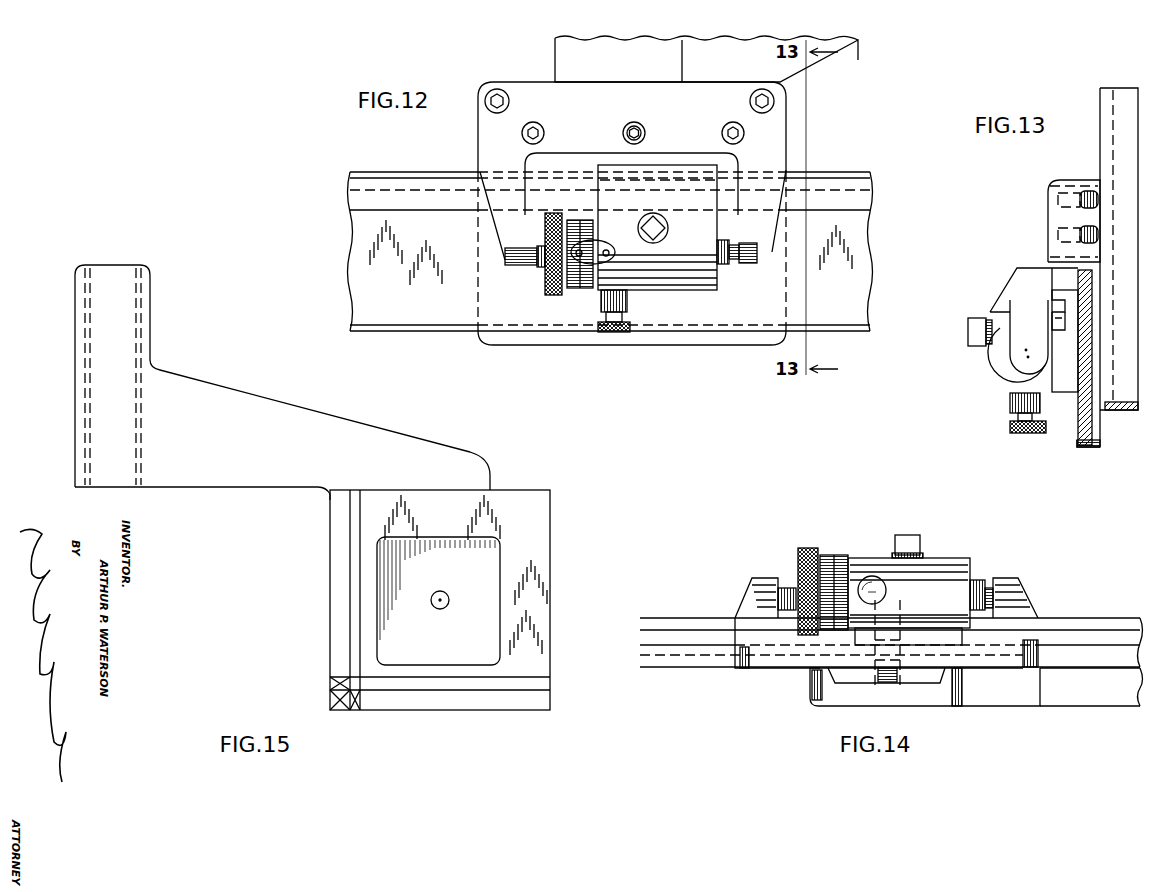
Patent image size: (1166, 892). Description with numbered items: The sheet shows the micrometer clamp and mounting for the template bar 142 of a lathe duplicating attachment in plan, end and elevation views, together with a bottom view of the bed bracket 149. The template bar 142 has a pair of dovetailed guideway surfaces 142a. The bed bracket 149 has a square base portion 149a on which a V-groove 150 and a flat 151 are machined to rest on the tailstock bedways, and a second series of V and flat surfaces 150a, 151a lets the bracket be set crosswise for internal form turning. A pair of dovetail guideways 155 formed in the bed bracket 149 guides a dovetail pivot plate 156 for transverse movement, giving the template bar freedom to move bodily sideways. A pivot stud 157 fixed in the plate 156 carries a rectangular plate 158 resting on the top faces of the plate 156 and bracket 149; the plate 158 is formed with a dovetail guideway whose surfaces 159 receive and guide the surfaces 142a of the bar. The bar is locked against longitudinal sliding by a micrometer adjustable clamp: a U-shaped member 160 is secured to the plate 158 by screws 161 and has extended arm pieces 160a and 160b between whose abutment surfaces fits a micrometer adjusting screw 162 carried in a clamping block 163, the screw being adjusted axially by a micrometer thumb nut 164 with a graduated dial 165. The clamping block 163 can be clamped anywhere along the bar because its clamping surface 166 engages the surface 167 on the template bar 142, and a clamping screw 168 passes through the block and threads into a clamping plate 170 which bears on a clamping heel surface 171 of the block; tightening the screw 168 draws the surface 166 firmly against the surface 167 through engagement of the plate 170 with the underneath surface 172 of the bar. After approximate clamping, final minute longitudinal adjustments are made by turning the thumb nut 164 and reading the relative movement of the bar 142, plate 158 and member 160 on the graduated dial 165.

In FIG. 12, the template bar 142 is at (410, 180).
In FIG. 13, the template bar 142 is at (1080, 418).
In FIG. 14, the template bar 142 is at (1102, 622).
In FIG. 12, the dovetailed guideway surfaces 142a is at (820, 180).
In FIG. 14, the dovetailed guideway surfaces 142a is at (698, 650).
In FIG. 13, the bed bracket 149 is at (1124, 94).
In FIG. 14, the bed bracket 149 is at (1100, 692).
In FIG. 15, the bed bracket 149 is at (407, 445).
In FIG. 15, the square base portion 149a is at (538, 522).
In FIG. 15, the V-groove 150 is at (482, 690).
In FIG. 15, the V surface 150a is at (354, 597).
In FIG. 15, the flat 151 is at (448, 505).
In FIG. 15, the flat surface 151a is at (535, 598).
In FIG. 12, the dovetail guideways 155 is at (680, 60).
In FIG. 13, the dovetail guideways 155 is at (1100, 154).
In FIG. 14, the dovetail guideways 155 is at (822, 673).
In FIG. 15, the dovetail guideways 155 is at (132, 268).
In FIG. 14, the dovetail pivot plate 156 is at (911, 684).
In FIG. 12, the pivot stud 157 is at (637, 122).
In FIG. 14, the pivot stud 157 is at (890, 622).
In FIG. 12, the rectangular plate 158 is at (678, 337).
In FIG. 13, the rectangular plate 158 is at (1098, 448).
In FIG. 14, the rectangular plate 158 is at (762, 662).
In FIG. 12, the dovetail guideway surfaces 159 is at (503, 178).
In FIG. 13, the dovetail guideway surfaces 159 is at (1088, 278).
In FIG. 14, the dovetail guideway surfaces 159 is at (1000, 652).
In FIG. 12, the U-shaped member 160 is at (778, 128).
In FIG. 13, the U-shaped member 160 is at (1043, 263).
In FIG. 14, the U-shaped member 160 is at (771, 578).
In FIG. 12, the extended arm piece 160a is at (511, 269).
In FIG. 14, the extended arm piece 160a is at (756, 598).
In FIG. 12, the extended arm piece 160b is at (760, 263).
In FIG. 13, the extended arm piece 160b is at (1018, 350).
In FIG. 14, the extended arm piece 160b is at (1018, 600).
In FIG. 12, the screws 161 is at (510, 104).
In FIG. 13, the screws 161 is at (1050, 235).
In FIG. 12, the micrometer adjusting screw 162 is at (725, 266).
In FIG. 13, the micrometer adjusting screw 162 is at (1012, 372).
In FIG. 14, the micrometer adjusting screw 162 is at (980, 578).
In FIG. 12, the clamping block 163 is at (656, 290).
In FIG. 13, the clamping block 163 is at (1000, 303).
In FIG. 14, the clamping block 163 is at (946, 560).
In FIG. 12, the micrometer thumb nut 164 is at (545, 303).
In FIG. 13, the micrometer thumb nut 164 is at (1005, 395).
In FIG. 14, the micrometer thumb nut 164 is at (808, 548).
In FIG. 12, the graduated dial 165 is at (580, 290).
In FIG. 14, the graduated dial 165 is at (835, 556).
In FIG. 13, the clamping surface 166 is at (1054, 322).
In FIG. 13, the surface on the template bar 167 is at (1052, 288).
In FIG. 12, the clamping screw 168 is at (708, 256).
In FIG. 13, the clamping screw 168 is at (968, 326).
In FIG. 14, the clamping screw 168 is at (906, 535).
In FIG. 13, the clamping plate 170 is at (1066, 392).
In FIG. 14, the clamping plate 170 is at (930, 634).
In FIG. 13, the clamping heel surface 171 is at (1059, 388).
In FIG. 13, the underneath surface 172 is at (1093, 303).